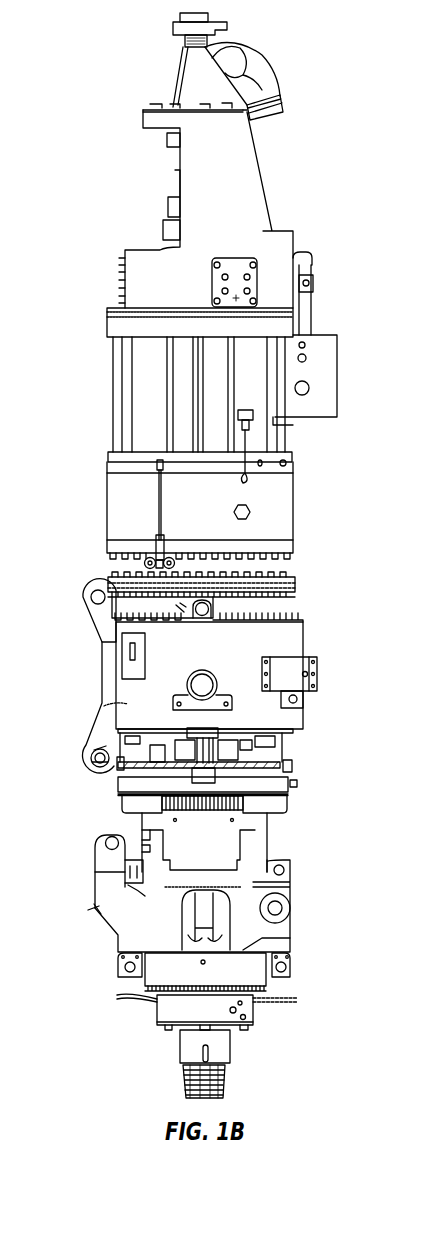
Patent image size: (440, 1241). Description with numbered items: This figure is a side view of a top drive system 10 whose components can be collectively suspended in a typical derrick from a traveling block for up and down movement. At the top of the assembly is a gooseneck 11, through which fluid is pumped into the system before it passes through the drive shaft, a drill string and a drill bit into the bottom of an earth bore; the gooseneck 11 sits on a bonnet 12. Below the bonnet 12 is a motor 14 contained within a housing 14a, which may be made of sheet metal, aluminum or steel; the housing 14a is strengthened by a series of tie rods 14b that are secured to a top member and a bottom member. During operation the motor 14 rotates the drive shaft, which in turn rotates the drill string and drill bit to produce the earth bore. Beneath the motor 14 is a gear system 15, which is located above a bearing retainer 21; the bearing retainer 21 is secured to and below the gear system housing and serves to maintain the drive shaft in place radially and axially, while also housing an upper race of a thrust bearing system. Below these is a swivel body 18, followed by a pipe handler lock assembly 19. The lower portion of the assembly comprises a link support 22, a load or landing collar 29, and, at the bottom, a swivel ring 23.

The top drive system 10 is at (303, 130).
The gooseneck 11 is at (253, 62).
The bonnet 12 is at (247, 176).
The motor 14 is at (198, 395).
The motor housing 14a is at (142, 373).
The tie rods 14b is at (268, 427).
The gear system 15 is at (283, 508).
The swivel body 18 is at (108, 678).
The pipe handler lock assembly 19 is at (283, 767).
The bearing retainer 21 is at (110, 603).
The link support 22 is at (95, 910).
The load collar 29 is at (158, 977).
The swivel ring 23 is at (162, 1012).